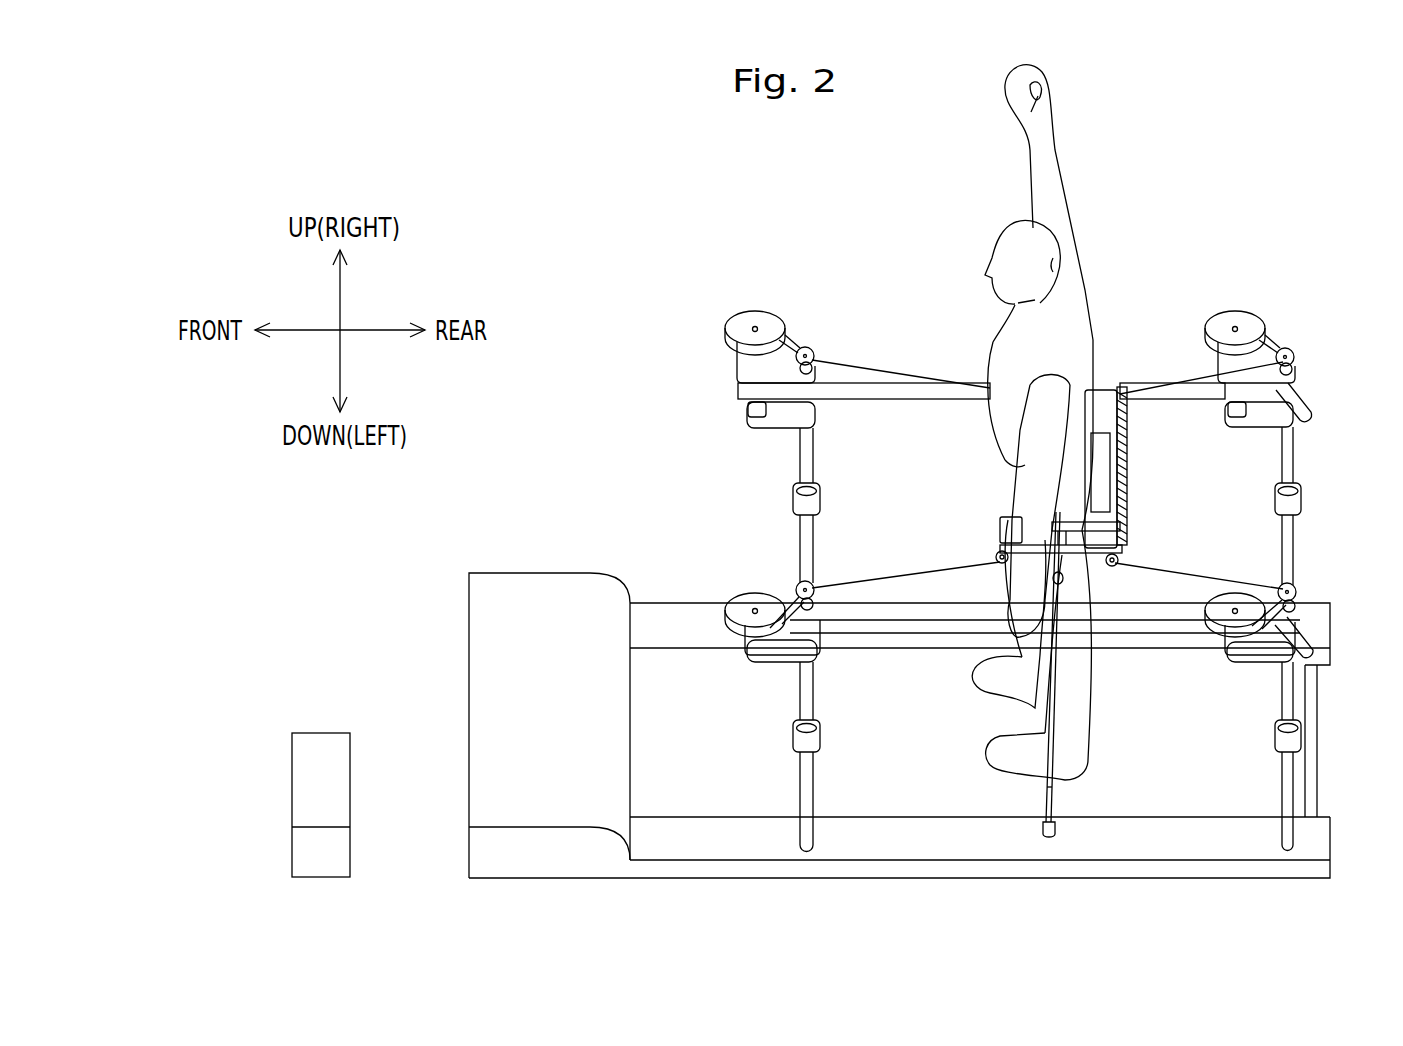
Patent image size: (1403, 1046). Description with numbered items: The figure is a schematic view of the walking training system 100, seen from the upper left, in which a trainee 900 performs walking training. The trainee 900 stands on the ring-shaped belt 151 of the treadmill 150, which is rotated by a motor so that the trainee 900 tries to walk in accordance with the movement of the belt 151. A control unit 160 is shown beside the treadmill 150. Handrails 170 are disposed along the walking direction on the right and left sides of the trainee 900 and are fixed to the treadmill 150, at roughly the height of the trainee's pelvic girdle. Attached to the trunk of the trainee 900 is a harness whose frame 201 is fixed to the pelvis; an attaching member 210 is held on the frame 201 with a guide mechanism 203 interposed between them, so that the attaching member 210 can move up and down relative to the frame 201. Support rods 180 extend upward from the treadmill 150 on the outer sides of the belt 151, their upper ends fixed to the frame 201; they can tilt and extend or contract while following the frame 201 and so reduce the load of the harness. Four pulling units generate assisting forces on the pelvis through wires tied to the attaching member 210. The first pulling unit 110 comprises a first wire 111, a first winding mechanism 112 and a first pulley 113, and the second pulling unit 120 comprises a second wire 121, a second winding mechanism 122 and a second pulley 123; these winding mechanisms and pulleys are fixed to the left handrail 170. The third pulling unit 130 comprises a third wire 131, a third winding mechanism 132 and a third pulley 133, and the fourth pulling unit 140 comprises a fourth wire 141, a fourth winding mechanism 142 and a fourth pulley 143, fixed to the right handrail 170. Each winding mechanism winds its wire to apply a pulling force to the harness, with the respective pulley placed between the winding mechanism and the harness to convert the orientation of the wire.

The walking training system 100 is at (557, 163).
The first pulling unit 110 is at (821, 585).
The first wire 111 is at (916, 563).
The first winding mechanism 112 is at (752, 598).
The first pulley 113 is at (813, 584).
The second pulling unit 120 is at (1252, 580).
The second wire 121 is at (1195, 570).
The second winding mechanism 122 is at (1236, 594).
The second pulley 123 is at (1297, 590).
The third pulling unit 130 is at (809, 327).
The third wire 131 is at (875, 370).
The third winding mechanism 132 is at (742, 312).
The third pulley 133 is at (808, 345).
The fourth pulling unit 140 is at (1246, 326).
The fourth wire 141 is at (1190, 378).
The fourth winding mechanism 142 is at (1256, 311).
The fourth pulley 143 is at (1298, 360).
The treadmill 150 is at (475, 855).
The belt 151 is at (692, 808).
The control unit 160 is at (320, 735).
The handrails 170 is at (921, 399).
The support rods 180 is at (1060, 785).
The frame 201 is at (1112, 368).
The guide mechanism 203 is at (1062, 540).
The attaching member 210 is at (996, 545).
The trainee 900 is at (1012, 226).